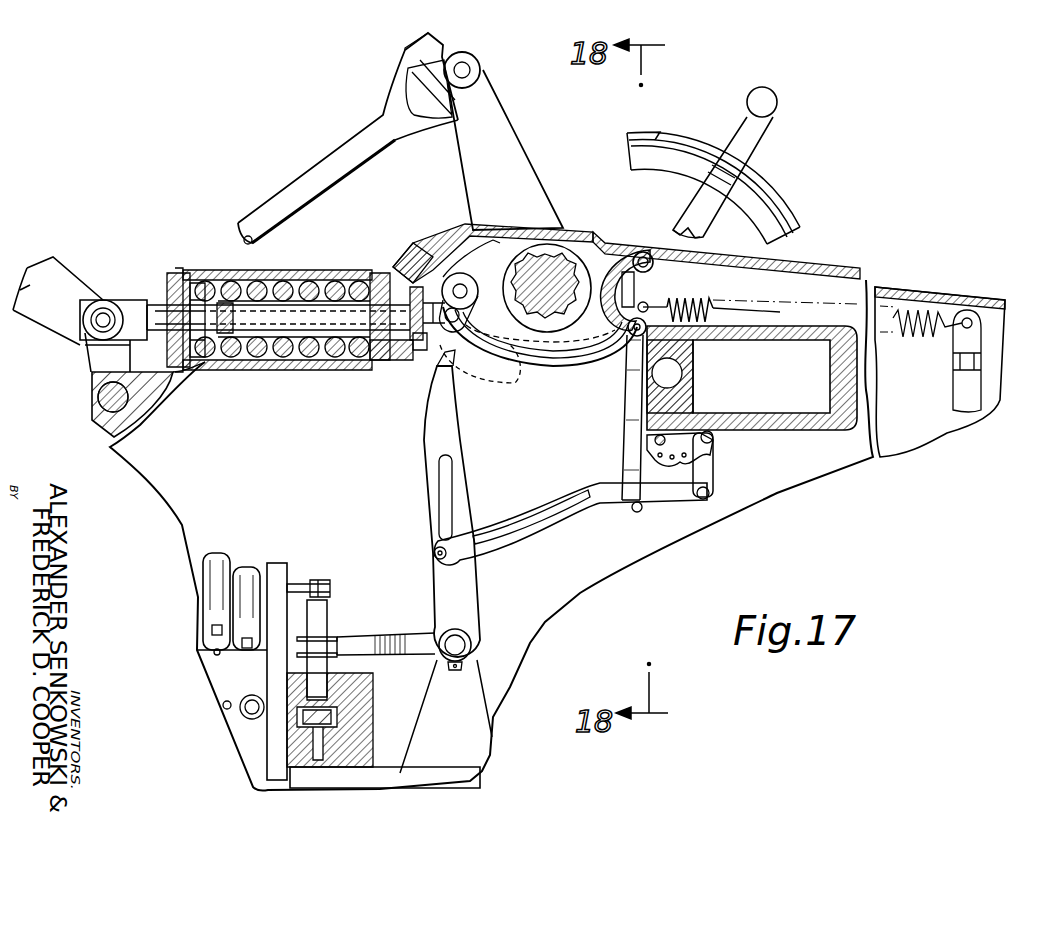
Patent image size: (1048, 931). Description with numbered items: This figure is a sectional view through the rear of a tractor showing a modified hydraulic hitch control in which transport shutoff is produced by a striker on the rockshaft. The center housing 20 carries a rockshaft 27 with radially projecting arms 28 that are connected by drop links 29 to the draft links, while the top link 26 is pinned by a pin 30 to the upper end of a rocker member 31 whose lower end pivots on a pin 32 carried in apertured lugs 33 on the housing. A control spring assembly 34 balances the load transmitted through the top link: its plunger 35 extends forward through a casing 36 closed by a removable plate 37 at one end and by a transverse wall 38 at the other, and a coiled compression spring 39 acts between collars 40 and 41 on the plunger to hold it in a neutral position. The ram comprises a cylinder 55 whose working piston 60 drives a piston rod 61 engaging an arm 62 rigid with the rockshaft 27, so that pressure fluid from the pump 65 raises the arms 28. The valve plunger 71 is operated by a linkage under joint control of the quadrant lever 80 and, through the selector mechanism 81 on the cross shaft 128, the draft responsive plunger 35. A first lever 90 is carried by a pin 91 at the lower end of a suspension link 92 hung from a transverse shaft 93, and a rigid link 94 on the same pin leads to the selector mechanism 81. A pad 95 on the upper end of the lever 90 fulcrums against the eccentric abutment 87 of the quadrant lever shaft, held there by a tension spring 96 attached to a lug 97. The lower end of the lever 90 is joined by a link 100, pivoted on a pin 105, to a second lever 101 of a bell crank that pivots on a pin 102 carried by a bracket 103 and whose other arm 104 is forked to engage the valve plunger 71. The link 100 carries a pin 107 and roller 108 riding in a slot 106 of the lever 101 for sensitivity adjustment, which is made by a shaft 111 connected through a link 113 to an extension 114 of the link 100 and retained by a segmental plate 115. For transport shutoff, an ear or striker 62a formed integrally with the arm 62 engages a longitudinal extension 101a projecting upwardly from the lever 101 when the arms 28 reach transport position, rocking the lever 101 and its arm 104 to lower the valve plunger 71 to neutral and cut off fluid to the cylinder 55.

The center housing 20 is at (815, 264).
The top link 26 is at (47, 283).
The rockshaft 27 is at (540, 268).
The arms 28 is at (515, 164).
The drop links 29 is at (322, 166).
The pin 30 is at (103, 312).
The rocker member 31 is at (95, 357).
The pin 32 is at (105, 397).
The apertured lugs 33 is at (95, 428).
The control spring assembly 34 is at (345, 262).
The plunger 35 is at (157, 305).
The casing 36 is at (270, 276).
The plate 37 is at (183, 285).
The transverse wall 38 is at (392, 362).
The coiled compression spring 39 is at (248, 352).
The collar 40 is at (192, 283).
The collar 41 is at (378, 272).
The cylinder 55 is at (780, 420).
The working piston 60 is at (698, 393).
The piston rod 61 is at (575, 365).
The arm 62 is at (513, 372).
The striker 62a is at (475, 372).
The pump 65 is at (248, 575).
The valve plunger 71 is at (322, 615).
The quadrant lever 80 is at (745, 145).
The selector mechanism 81 is at (447, 270).
The eccentric abutment 87 is at (683, 254).
The first lever 90 is at (628, 437).
The pin 91 is at (628, 327).
The suspension link 92 is at (603, 247).
The transverse shaft 93 is at (645, 252).
The rigid link 94 is at (543, 362).
The pad 95 is at (648, 302).
The coiled tension spring 96 is at (717, 312).
The lug 97 is at (652, 298).
The link 100 is at (563, 515).
The second lever 101 is at (415, 489).
The extension 101a is at (425, 405).
The pin 102 is at (465, 648).
The bracket 103 is at (463, 702).
The arm 104 is at (398, 636).
The pin 105 is at (637, 513).
The slot 106 is at (427, 520).
The pin 107 is at (434, 556).
The roller 108 is at (460, 557).
The shaft 111 is at (650, 450).
The link 113 is at (712, 467).
The extension 114 is at (690, 497).
The segmental plate 115 is at (713, 447).
The cross shaft 128 is at (466, 300).